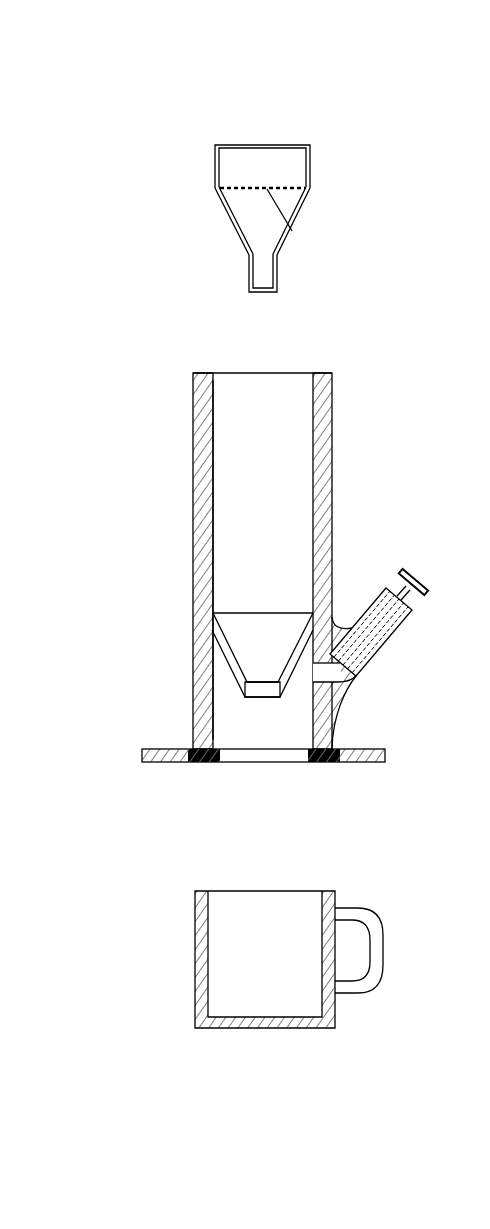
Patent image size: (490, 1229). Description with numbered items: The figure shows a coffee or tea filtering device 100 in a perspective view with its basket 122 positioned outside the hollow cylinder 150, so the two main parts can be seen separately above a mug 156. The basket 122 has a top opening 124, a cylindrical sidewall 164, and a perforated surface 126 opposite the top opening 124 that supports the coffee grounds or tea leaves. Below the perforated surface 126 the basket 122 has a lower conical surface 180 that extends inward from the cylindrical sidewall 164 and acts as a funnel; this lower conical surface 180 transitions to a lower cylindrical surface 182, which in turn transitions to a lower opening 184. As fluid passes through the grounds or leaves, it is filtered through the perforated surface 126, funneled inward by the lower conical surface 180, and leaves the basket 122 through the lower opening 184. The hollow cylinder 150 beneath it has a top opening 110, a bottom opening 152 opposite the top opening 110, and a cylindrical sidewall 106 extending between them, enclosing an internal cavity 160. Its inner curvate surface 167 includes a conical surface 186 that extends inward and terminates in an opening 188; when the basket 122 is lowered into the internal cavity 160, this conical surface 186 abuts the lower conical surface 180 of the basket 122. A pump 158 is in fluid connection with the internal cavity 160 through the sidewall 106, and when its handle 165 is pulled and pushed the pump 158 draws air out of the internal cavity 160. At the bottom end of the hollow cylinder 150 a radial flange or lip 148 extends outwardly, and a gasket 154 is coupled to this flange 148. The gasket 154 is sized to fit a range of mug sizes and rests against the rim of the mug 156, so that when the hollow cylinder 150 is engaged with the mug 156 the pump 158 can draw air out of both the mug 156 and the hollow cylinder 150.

The coffee or tea filtering device 100 is at (102, 334).
The basket 122 is at (272, 92).
The top opening 124 is at (246, 130).
The cylindrical sidewall 164 is at (311, 157).
The lower conical surface 180 is at (230, 220).
The perforated surface 126 is at (290, 232).
The lower cylindrical surface 182 is at (250, 270).
The lower opening 184 is at (259, 308).
The top opening 110 is at (280, 351).
The hollow cylinder 150 is at (162, 511).
The cylindrical sidewall 106 is at (322, 517).
The inner curvate surface 167 is at (213, 405).
The internal cavity 160 is at (282, 517).
The conical surface 186 is at (300, 655).
The opening 188 is at (256, 666).
The pump 158 is at (413, 648).
The handle 165 is at (408, 570).
The radial flange or lip 148 is at (363, 762).
The gasket 154 is at (327, 762).
The bottom opening 152 is at (249, 778).
The mug 156 is at (172, 972).